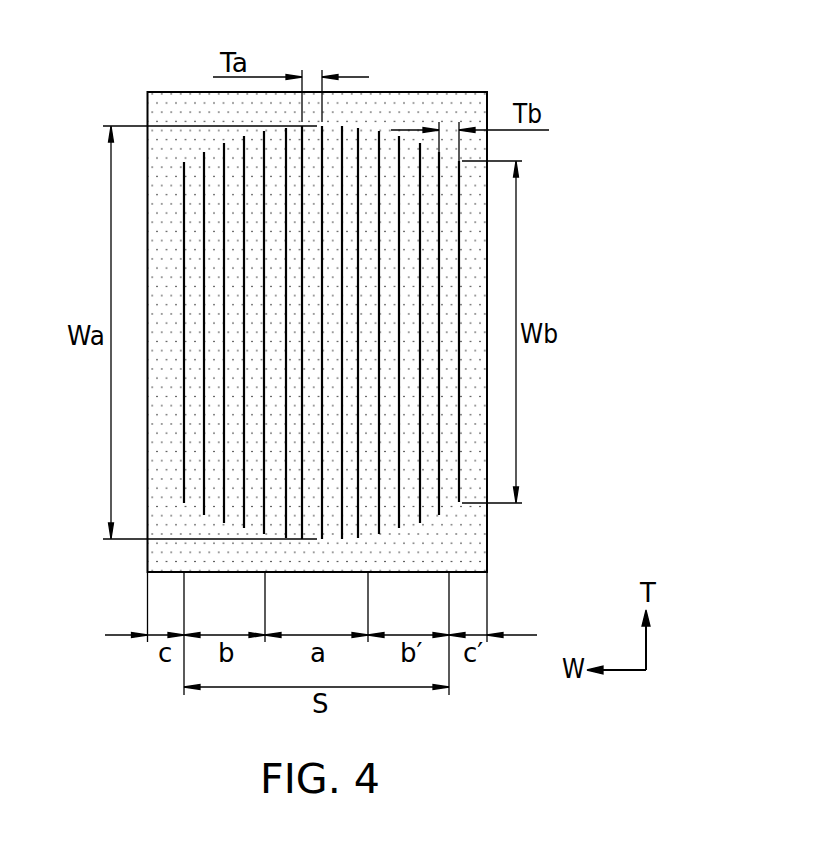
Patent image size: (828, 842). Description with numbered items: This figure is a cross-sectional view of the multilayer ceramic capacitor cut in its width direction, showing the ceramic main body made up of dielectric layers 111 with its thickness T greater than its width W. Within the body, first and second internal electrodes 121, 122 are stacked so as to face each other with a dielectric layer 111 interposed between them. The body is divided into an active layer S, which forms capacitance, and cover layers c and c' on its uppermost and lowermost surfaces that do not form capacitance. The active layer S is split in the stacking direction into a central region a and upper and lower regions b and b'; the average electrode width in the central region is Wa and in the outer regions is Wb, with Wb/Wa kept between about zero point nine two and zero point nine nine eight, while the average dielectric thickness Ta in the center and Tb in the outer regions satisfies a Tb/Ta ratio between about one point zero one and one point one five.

The dielectric layer 111 is at (200, 108).
The first internal electrode 121 is at (460, 247).
The second internal electrode 122 is at (439, 297).